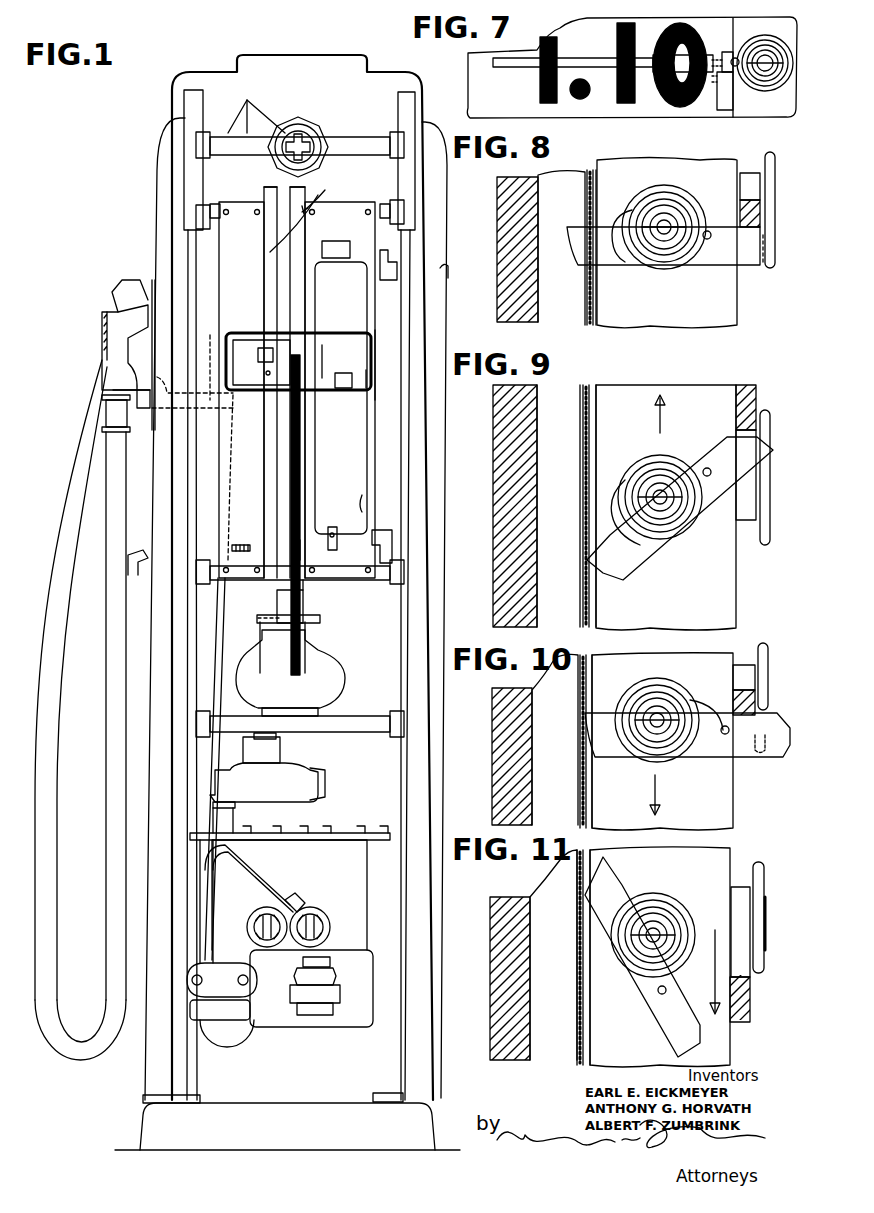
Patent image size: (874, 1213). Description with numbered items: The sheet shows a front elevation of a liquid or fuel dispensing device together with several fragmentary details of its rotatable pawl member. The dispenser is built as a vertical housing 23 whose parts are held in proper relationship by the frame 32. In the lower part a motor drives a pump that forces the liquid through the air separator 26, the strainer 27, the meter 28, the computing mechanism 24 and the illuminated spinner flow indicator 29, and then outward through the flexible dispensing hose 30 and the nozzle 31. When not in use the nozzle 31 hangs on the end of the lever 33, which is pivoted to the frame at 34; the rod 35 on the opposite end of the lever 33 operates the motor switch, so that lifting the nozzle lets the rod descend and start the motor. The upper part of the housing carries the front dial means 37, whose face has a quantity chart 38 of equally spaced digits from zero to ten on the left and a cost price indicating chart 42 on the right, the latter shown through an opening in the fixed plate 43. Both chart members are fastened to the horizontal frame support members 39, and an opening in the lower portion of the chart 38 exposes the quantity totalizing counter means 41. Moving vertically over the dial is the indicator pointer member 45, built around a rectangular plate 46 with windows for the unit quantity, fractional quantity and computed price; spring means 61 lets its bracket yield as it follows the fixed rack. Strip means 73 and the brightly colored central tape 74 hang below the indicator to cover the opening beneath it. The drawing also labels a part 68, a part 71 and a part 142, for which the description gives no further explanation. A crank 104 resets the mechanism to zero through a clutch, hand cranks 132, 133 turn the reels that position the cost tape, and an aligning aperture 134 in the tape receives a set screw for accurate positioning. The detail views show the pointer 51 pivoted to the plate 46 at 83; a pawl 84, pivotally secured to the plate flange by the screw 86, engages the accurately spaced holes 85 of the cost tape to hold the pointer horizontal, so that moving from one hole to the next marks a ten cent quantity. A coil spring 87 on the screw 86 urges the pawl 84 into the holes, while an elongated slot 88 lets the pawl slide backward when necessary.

In FIG. 1, the housing 23 is at (150, 1062).
In FIG. 1, the computing mechanism 24 is at (394, 341).
In FIG. 1, the air separator 26 is at (332, 892).
In FIG. 1, the strainer 27 is at (310, 770).
In FIG. 1, the meter 28 is at (338, 683).
In FIG. 1, the illuminated spinner flow indicator 29 is at (308, 140).
In FIG. 1, the flexible dispensing hose 30 is at (62, 505).
In FIG. 1, the nozzle 31 is at (118, 351).
In FIG. 1, the frame 32 is at (197, 112).
In FIG. 1, the lever 33 is at (140, 378).
In FIG. 1, the pivot 34 is at (192, 447).
In FIG. 1, the rod 35 is at (220, 626).
In FIG. 1, the front dial means 37 is at (340, 205).
In FIG. 1, the quantity chart 38 is at (236, 205).
In FIG. 1, the horizontal frame support members 39 is at (205, 222).
In FIG. 1, the quantity totalizing counter means 41 is at (247, 548).
In FIG. 1, the cost price indicating chart 42 is at (362, 502).
In FIG. 7, the cost price indicating chart 42 is at (640, 107).
In FIG. 8, the cost price indicating chart 42 is at (585, 190).
In FIG. 9, the cost price indicating chart 42 is at (583, 400).
In FIG. 10, the cost price indicating chart 42 is at (580, 710).
In FIG. 11, the cost price indicating chart 42 is at (577, 880).
In FIG. 1, the fixed plate 43 is at (352, 580).
In FIG. 8, the fixed plate 43 is at (497, 300).
In FIG. 9, the fixed plate 43 is at (495, 470).
In FIG. 10, the fixed plate 43 is at (492, 735).
In FIG. 11, the fixed plate 43 is at (490, 910).
In FIG. 1, the indicator pointer member 45 is at (372, 378).
In FIG. 1, the rectangular plate 46 is at (238, 338).
In FIG. 7, the rectangular plate 46 is at (773, 113).
In FIG. 7, the pointer 51 is at (603, 62).
In FIG. 8, the pointer 51 is at (752, 172).
In FIG. 9, the pointer 51 is at (758, 410).
In FIG. 10, the pointer 51 is at (763, 700).
In FIG. 11, the pointer 51 is at (748, 1005).
In FIG. 1, the spring means 61 is at (366, 352).
In FIG. 1, the plate 68 is at (302, 616).
In FIG. 1, the pointer 71 is at (304, 211).
In FIG. 1, the strip means 73 is at (262, 672).
In FIG. 1, the central tape 74 is at (300, 548).
In FIG. 7, the pivot 83 is at (762, 55).
In FIG. 8, the pivot 83 is at (775, 215).
In FIG. 9, the pivot 83 is at (770, 480).
In FIG. 10, the pivot 83 is at (768, 670).
In FIG. 11, the pivot 83 is at (765, 905).
In FIG. 7, the pawl 84 is at (733, 75).
In FIG. 8, the pawl 84 is at (760, 268).
In FIG. 9, the pawl 84 is at (728, 440).
In FIG. 10, the pawl 84 is at (768, 760).
In FIG. 11, the pawl 84 is at (665, 1028).
In FIG. 8, the holes 85 is at (587, 283).
In FIG. 9, the holes 85 is at (583, 474).
In FIG. 10, the holes 85 is at (580, 785).
In FIG. 11, the holes 85 is at (577, 948).
In FIG. 8, the screw 86 is at (672, 220).
In FIG. 9, the screw 86 is at (665, 480).
In FIG. 10, the screw 86 is at (648, 740).
In FIG. 11, the screw 86 is at (660, 928).
In FIG. 8, the coil spring 87 is at (672, 266).
In FIG. 9, the coil spring 87 is at (680, 530).
In FIG. 10, the coil spring 87 is at (672, 762).
In FIG. 11, the coil spring 87 is at (695, 945).
In FIG. 8, the elongated slot 88 is at (614, 240).
In FIG. 9, the elongated slot 88 is at (640, 548).
In FIG. 10, the elongated slot 88 is at (690, 745).
In FIG. 1, the crank 104 is at (142, 560).
In FIG. 1, the hand crank 132 is at (395, 550).
In FIG. 1, the hand crank 133 is at (396, 262).
In FIG. 1, the aligning aperture 134 is at (338, 547).
In FIG. 1, the hook 142 is at (447, 272).